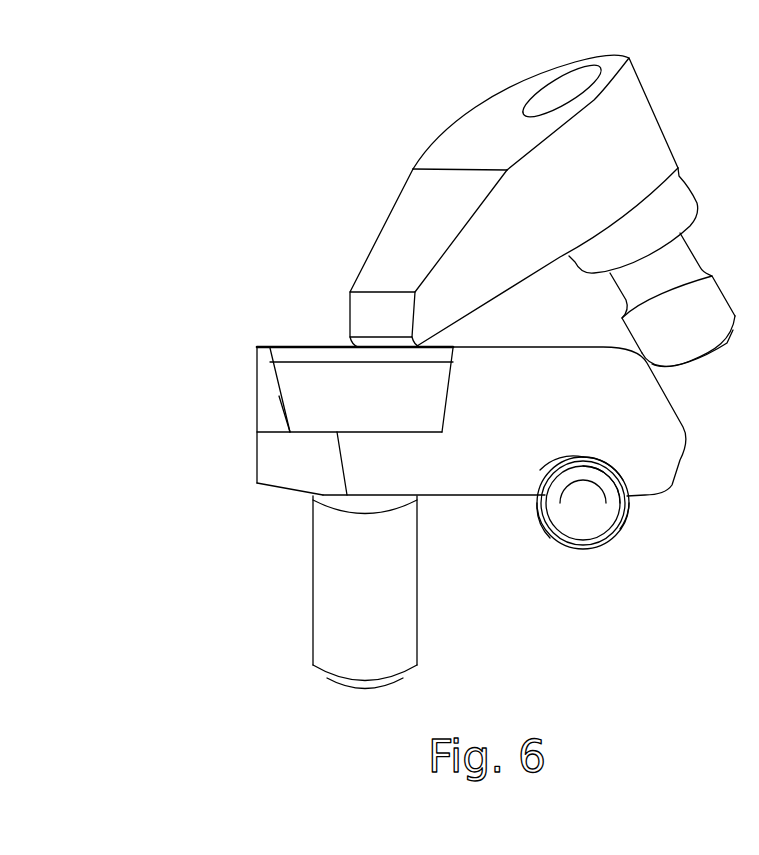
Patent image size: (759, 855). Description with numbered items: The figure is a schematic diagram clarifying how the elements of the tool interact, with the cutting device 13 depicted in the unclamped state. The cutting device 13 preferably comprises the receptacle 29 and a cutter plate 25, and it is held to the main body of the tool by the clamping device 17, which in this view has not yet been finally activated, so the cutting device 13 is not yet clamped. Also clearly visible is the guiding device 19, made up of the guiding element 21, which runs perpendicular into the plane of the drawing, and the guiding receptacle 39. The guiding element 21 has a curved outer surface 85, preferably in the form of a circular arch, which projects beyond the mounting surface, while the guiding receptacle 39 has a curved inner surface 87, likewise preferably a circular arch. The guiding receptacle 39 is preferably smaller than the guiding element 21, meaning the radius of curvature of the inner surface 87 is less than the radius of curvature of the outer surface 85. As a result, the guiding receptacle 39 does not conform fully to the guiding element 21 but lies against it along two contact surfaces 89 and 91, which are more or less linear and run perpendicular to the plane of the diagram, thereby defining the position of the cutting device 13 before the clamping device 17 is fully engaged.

The cutting device 13 is at (260, 498).
The clamping device 17 is at (663, 102).
The guiding device 19 is at (521, 511).
The guiding element 21 is at (593, 528).
The cutter plate 25 is at (296, 384).
The receptacle 29 is at (272, 461).
The guiding receptacle 39 is at (612, 459).
The outer surface 85 is at (568, 462).
The inner surface 87 is at (588, 462).
The contact surface 89 is at (542, 507).
The contact surface 91 is at (628, 497).